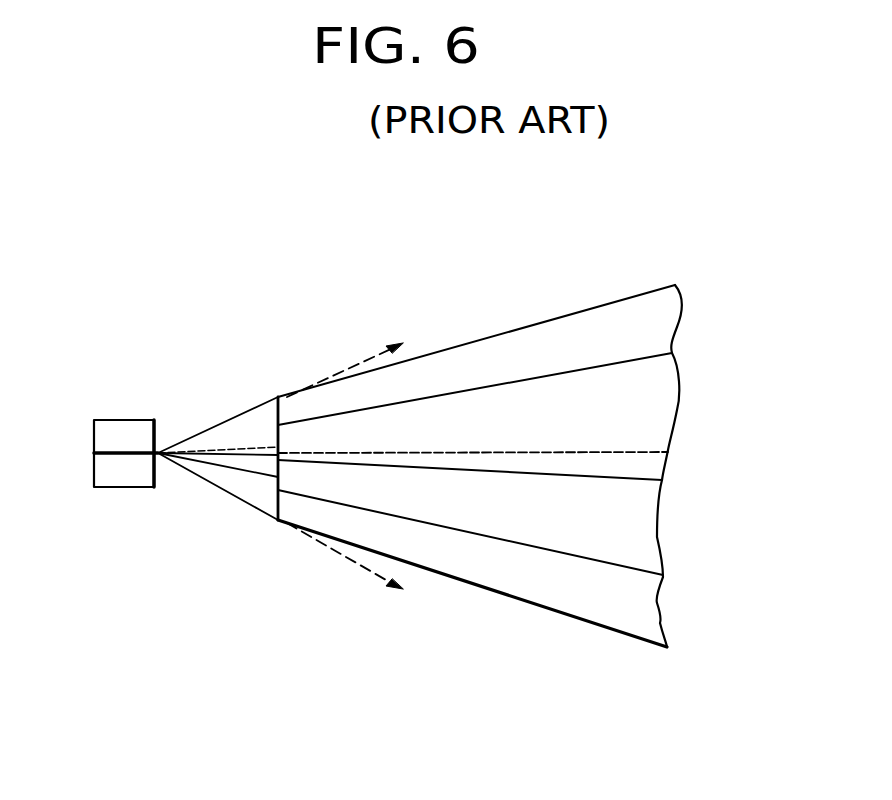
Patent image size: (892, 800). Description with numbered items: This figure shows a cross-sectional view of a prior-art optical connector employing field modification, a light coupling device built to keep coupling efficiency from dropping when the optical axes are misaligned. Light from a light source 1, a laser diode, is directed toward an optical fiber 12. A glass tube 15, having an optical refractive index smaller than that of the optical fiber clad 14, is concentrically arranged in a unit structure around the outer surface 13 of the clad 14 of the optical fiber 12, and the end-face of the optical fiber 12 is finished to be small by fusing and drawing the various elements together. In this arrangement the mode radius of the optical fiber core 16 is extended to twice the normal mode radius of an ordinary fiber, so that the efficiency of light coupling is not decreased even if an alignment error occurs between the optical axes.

The light source 1 is at (118, 432).
The optical fiber 12 is at (673, 358).
The outer surface 13 is at (563, 375).
The optical fiber clad 14 is at (605, 540).
The glass tube 15 is at (465, 368).
The optical fiber core 16 is at (525, 463).